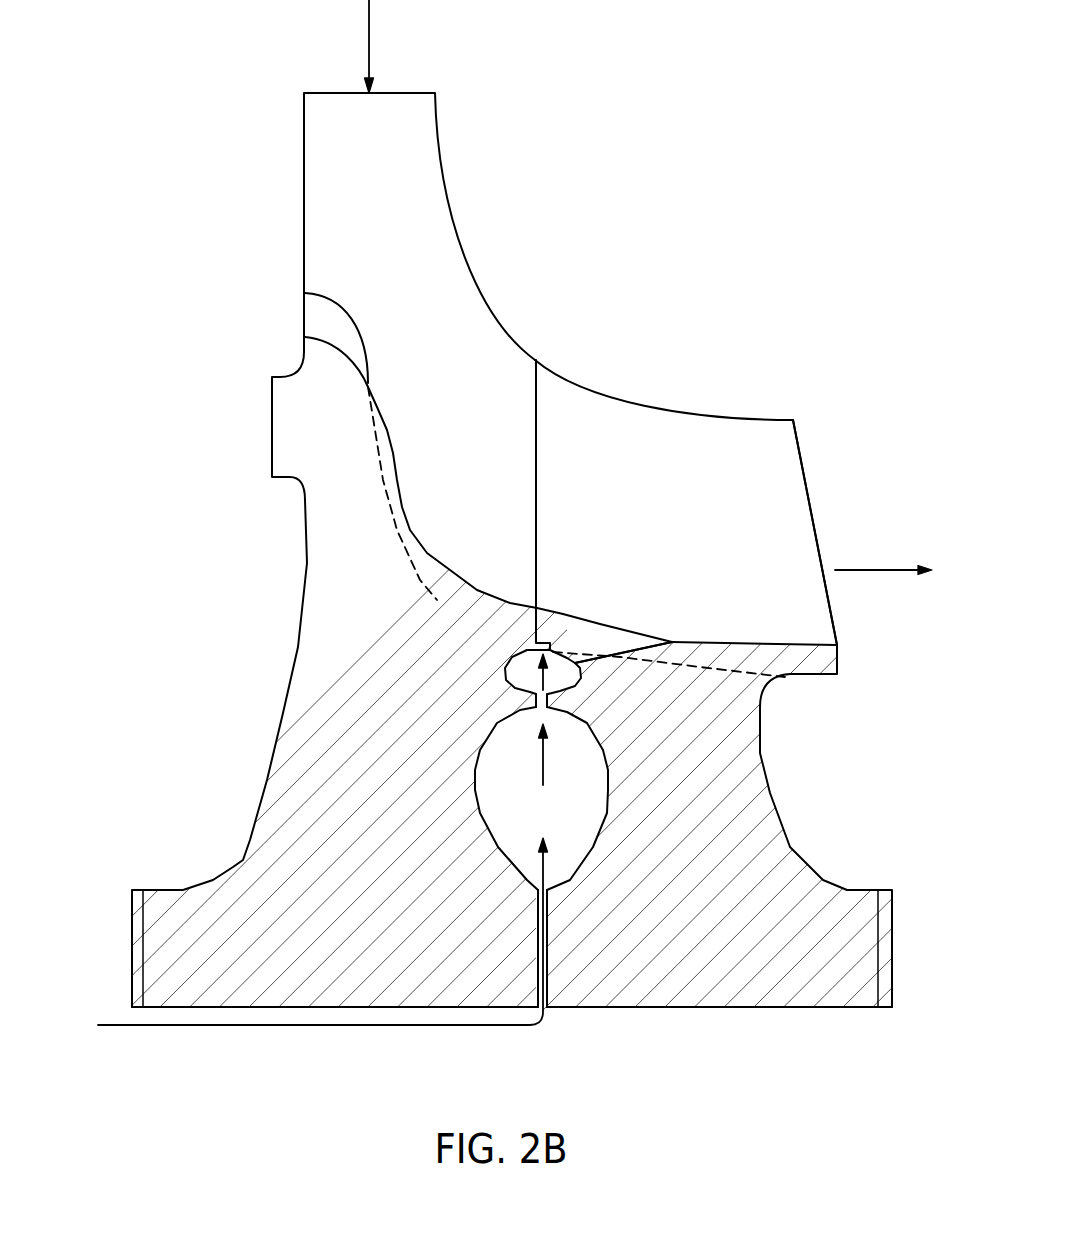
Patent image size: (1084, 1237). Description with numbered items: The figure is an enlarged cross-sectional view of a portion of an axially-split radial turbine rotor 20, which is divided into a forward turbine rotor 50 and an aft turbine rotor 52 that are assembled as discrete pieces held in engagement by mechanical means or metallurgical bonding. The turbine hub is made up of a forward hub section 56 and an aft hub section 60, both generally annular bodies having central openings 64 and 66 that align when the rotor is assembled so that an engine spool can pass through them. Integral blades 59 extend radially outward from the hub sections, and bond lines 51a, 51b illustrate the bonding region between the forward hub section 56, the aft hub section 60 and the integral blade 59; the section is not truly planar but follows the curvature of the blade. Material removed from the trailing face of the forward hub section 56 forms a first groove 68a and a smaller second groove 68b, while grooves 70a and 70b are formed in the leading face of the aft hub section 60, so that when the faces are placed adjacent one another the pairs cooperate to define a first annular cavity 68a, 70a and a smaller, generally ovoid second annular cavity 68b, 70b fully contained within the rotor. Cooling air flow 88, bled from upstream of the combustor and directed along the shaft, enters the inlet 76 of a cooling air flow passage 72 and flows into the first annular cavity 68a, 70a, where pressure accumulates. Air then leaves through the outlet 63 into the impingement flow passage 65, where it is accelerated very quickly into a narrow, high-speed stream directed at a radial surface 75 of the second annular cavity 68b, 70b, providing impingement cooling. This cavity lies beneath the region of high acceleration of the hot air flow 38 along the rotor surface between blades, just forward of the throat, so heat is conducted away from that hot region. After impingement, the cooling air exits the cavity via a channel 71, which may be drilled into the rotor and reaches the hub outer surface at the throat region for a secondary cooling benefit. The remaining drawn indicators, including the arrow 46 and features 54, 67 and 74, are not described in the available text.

The radial turbine rotor 20 is at (722, 232).
The hot air flow 38 is at (370, 36).
The gas path flow direction 46 is at (883, 545).
The forward turbine rotor 50 is at (500, 254).
The bond line 51a is at (437, 600).
The bond line 51b is at (697, 670).
The aft turbine rotor 52 is at (698, 389).
The blade leading edge 54 is at (552, 628).
The forward hub section 56 is at (292, 682).
The integral blade 59 is at (802, 448).
The aft hub section 60 is at (776, 794).
The inlet of impingement flow passage 63 is at (548, 710).
The central opening 64 is at (342, 1020).
The impingement flow passage 65 is at (562, 690).
The central opening 66 is at (676, 1018).
The neck passage 67 is at (530, 692).
The first annular cavity or groove 68a is at (482, 792).
The second annular cavity or groove 68b is at (518, 668).
The first annular cavity or groove 70a is at (602, 792).
The second annular cavity or groove 70b is at (556, 660).
The channel 71 is at (640, 648).
The cooling air flow passage 72 is at (535, 935).
The inlet channel aft wall 74 is at (554, 890).
The radial surface 75 is at (530, 650).
The inlet of hub cooling air passage 76 is at (550, 1005).
The cooling air flow 88 is at (546, 868).